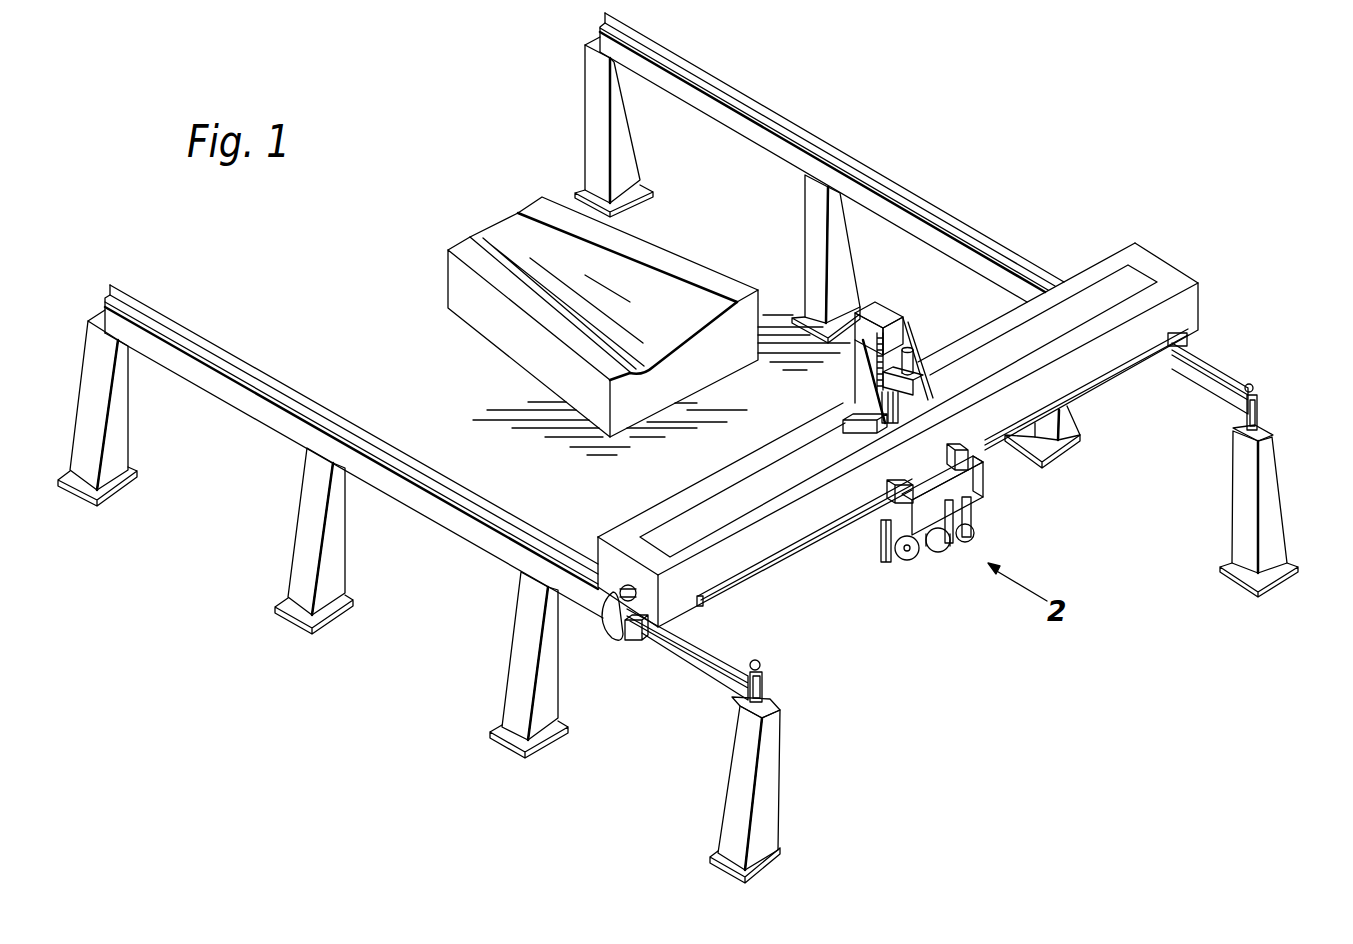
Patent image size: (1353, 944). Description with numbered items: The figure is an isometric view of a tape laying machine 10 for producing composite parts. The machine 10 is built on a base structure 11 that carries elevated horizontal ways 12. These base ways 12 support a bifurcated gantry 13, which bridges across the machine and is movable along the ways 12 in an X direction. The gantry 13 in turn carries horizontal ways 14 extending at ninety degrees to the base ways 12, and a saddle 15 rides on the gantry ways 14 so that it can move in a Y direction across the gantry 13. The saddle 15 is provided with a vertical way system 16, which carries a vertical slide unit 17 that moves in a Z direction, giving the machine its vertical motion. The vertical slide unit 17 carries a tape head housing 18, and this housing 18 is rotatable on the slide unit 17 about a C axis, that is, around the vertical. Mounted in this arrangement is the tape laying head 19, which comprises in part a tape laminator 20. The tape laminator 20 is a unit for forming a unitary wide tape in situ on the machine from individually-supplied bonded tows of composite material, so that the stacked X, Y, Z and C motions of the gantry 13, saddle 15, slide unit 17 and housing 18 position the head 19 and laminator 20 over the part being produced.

The tape laying machine 10 is at (1226, 262).
The base structure 11 is at (777, 772).
The horizontal ways 12 is at (750, 653).
The bifurcated gantry 13 is at (678, 492).
The gantry ways 14 is at (790, 552).
The saddle 15 is at (985, 477).
The vertical way system 16 is at (940, 387).
The vertical slide unit 17 is at (928, 390).
The tape head housing 18 is at (880, 548).
The tape laying head 19 is at (995, 537).
The tape laminator 20 is at (920, 545).